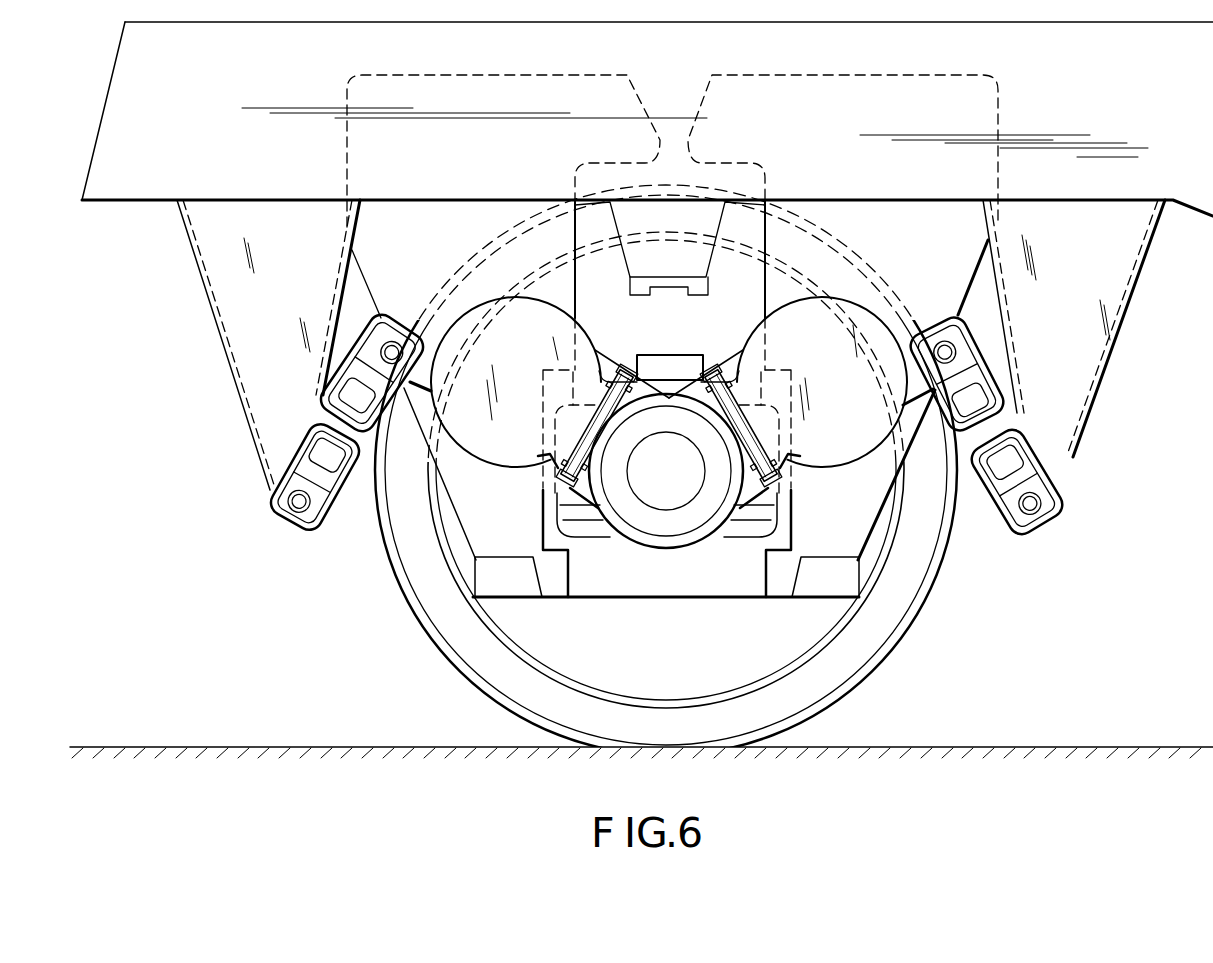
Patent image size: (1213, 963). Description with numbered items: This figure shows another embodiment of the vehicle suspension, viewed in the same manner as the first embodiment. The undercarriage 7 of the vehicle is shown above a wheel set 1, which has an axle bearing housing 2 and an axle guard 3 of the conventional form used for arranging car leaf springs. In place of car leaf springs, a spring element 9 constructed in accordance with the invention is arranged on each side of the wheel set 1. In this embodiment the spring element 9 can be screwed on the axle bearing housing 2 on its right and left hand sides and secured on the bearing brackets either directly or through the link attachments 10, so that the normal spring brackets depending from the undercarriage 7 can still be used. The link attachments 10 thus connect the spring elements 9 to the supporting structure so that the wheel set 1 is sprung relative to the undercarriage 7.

The wheel set 1 is at (498, 683).
The axle bearing housing 2 is at (633, 518).
The axle guard 3 is at (465, 530).
The undercarriage 7 is at (167, 180).
The spring element 9 is at (455, 461).
The link attachment 10 is at (268, 506).